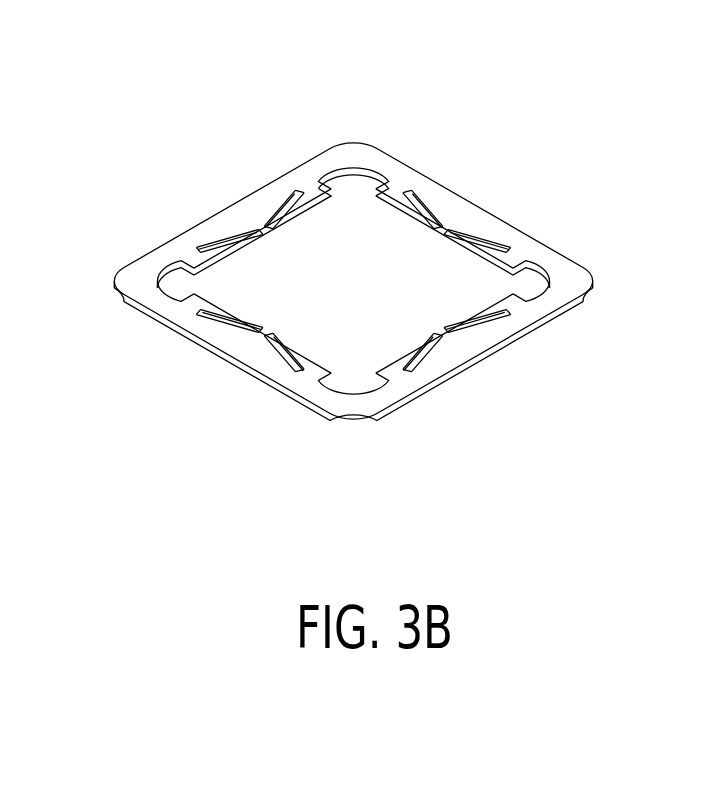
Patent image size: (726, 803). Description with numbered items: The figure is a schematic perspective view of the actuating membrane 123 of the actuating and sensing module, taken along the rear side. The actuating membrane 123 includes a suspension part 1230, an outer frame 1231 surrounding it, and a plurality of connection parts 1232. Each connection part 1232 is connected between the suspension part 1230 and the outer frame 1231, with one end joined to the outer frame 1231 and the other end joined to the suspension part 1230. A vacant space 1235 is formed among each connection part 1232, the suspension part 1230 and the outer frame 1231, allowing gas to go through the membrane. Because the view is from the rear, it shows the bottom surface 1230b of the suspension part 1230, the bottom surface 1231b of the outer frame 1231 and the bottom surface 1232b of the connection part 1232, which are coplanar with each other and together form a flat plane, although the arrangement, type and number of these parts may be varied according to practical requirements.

The actuating membrane 123 is at (666, 62).
The outer frame 1231 is at (595, 313).
The bottom surface of the outer frame 1231b is at (577, 280).
The connection part 1232 is at (266, 229).
The bottom surface of the connection part 1232b is at (263, 231).
The vacant space 1235 is at (353, 178).
The suspension part 1230 is at (343, 387).
The bottom surface of the suspension part 1230b is at (367, 365).